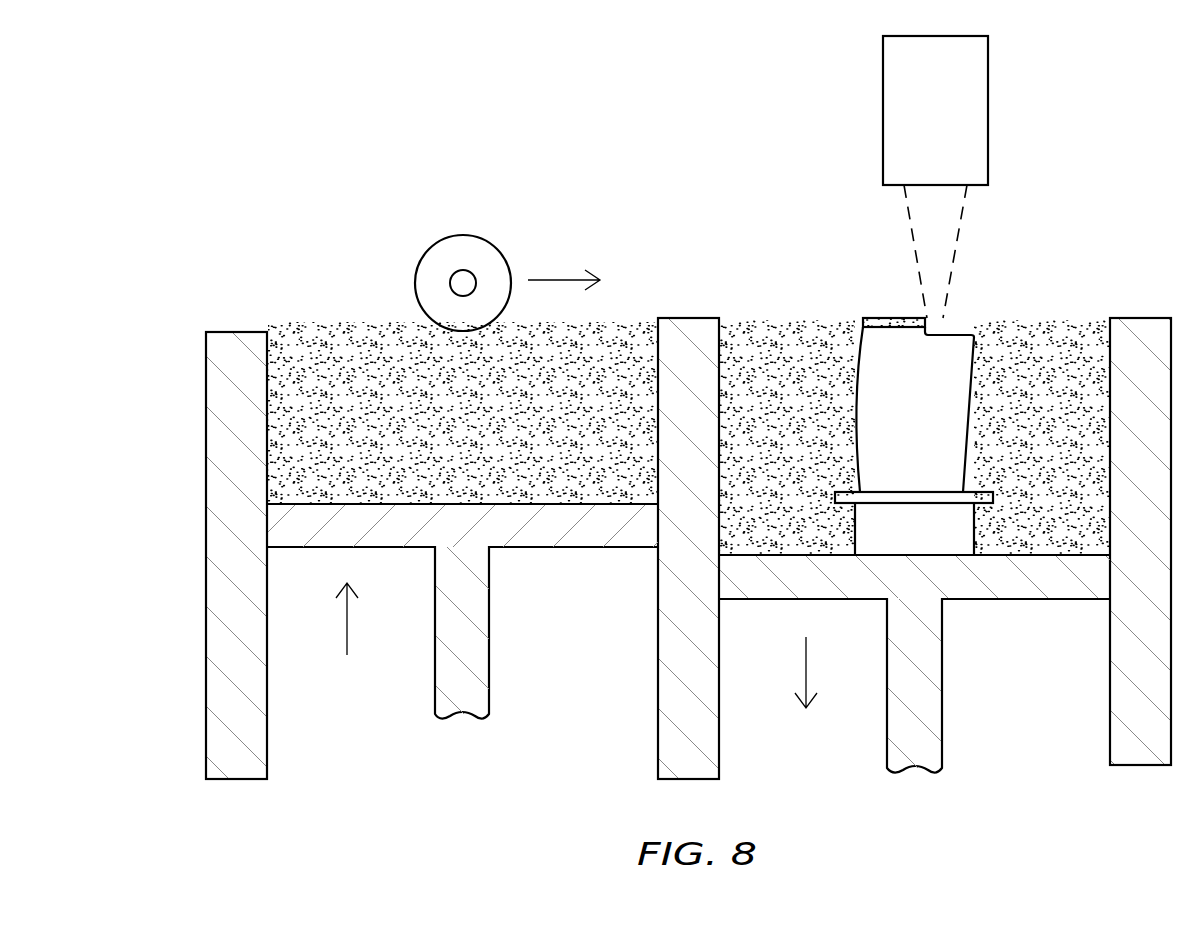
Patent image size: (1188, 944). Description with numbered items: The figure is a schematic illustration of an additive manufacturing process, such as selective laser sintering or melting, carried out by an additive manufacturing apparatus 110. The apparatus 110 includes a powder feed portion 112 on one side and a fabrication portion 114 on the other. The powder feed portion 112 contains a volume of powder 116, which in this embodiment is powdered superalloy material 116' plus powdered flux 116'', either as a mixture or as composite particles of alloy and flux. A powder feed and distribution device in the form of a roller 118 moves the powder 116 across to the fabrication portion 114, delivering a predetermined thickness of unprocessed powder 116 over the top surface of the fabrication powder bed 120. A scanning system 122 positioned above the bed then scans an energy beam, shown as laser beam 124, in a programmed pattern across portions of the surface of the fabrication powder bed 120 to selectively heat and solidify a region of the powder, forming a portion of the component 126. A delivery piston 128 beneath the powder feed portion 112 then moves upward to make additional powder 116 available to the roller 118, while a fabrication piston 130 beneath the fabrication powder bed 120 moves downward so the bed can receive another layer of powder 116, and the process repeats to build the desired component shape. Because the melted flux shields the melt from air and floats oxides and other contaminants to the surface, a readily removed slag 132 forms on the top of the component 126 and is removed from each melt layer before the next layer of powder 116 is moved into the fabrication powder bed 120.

The additive manufacturing apparatus 110 is at (512, 147).
The powder feed portion 112 is at (270, 318).
The fabrication portion 114 is at (1105, 305).
The powder 116 is at (392, 389).
The powdered superalloy material 116' is at (218, 361).
The powdered flux 116'' is at (218, 423).
The roller 118 is at (435, 250).
The fabrication powder bed 120 is at (995, 318).
The scanning system 122 is at (955, 124).
The laser beam 124 is at (913, 222).
The component 126 is at (930, 431).
The delivery piston 128 is at (490, 622).
The fabrication piston 130 is at (942, 672).
The slag 132 is at (880, 318).